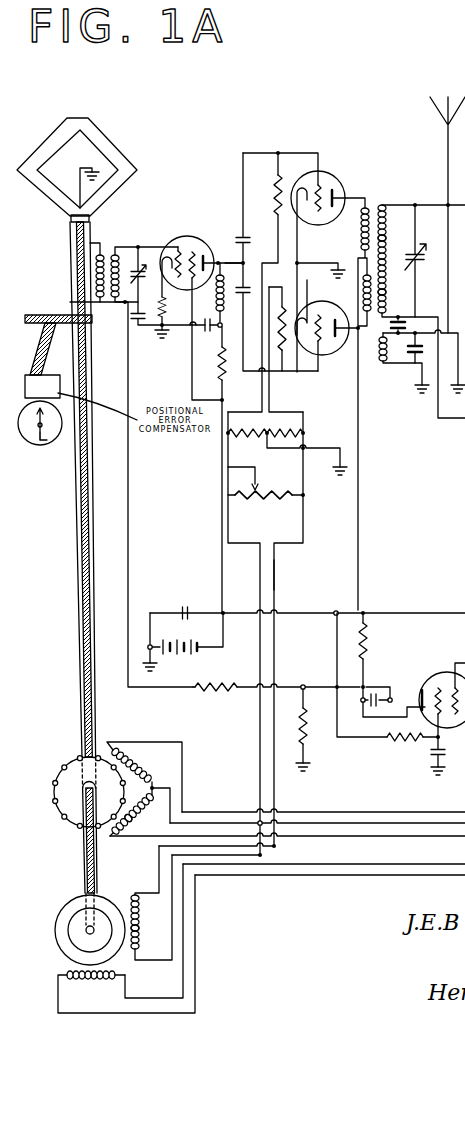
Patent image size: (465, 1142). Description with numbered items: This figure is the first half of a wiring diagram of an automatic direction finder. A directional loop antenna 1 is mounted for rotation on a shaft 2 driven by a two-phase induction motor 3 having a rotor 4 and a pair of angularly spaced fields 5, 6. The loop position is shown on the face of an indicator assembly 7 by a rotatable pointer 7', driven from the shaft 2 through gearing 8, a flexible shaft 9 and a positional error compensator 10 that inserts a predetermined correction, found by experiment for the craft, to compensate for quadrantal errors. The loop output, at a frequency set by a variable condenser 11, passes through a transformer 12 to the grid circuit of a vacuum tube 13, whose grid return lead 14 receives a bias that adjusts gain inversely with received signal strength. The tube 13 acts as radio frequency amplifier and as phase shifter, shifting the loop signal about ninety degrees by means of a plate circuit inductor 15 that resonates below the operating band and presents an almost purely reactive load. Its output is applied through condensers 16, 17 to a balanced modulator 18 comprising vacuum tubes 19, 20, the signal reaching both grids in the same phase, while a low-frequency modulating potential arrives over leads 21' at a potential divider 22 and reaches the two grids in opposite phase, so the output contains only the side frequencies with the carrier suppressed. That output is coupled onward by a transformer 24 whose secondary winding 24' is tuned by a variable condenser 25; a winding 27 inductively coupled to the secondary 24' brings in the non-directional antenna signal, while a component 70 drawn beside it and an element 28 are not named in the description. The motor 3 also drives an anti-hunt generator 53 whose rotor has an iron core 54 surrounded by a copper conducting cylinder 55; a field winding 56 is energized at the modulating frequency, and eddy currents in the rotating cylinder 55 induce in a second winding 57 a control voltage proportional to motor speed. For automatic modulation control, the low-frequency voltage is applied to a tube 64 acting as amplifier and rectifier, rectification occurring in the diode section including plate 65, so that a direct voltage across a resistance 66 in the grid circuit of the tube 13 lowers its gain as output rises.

The directional loop antenna 1 is at (120, 140).
The shaft 2 is at (72, 541).
The two-phase induction motor 3 is at (144, 777).
The rotor 4 is at (52, 782).
The field 5 is at (143, 758).
The field 6 is at (142, 818).
The indicator assembly 7 is at (37, 433).
The rotatable pointer 7' is at (51, 448).
The gearing 8 is at (46, 315).
The flexible shaft 9 is at (35, 346).
The positional error compensator 10 is at (55, 378).
The variable condenser 11 is at (145, 262).
The transformer 12 is at (108, 250).
The vacuum tube 13 is at (186, 238).
The grid return lead 14 is at (130, 398).
The plate circuit inductor 15 is at (222, 312).
The condenser 16 is at (243, 234).
The condenser 17 is at (250, 283).
The balanced modulator 18 is at (273, 269).
The vacuum tube 19 is at (330, 178).
The vacuum tube 20 is at (337, 357).
The leads 21' is at (294, 571).
The potential divider 22 is at (300, 506).
The transformer 24 is at (379, 240).
The secondary winding 24' is at (421, 299).
The variable condenser 25 is at (423, 261).
The transformer winding 27 is at (383, 366).
The bypass capacitor 28 is at (414, 356).
The anti-hunt generator 53 is at (73, 897).
The iron core 54 is at (72, 920).
The conducting cylinder 55 is at (62, 946).
The field winding 56 is at (140, 912).
The second winding 57 is at (72, 982).
The tube 64 is at (436, 662).
The plate 65 is at (407, 742).
The resistance 66 is at (310, 740).
The capacitor 70 is at (385, 327).